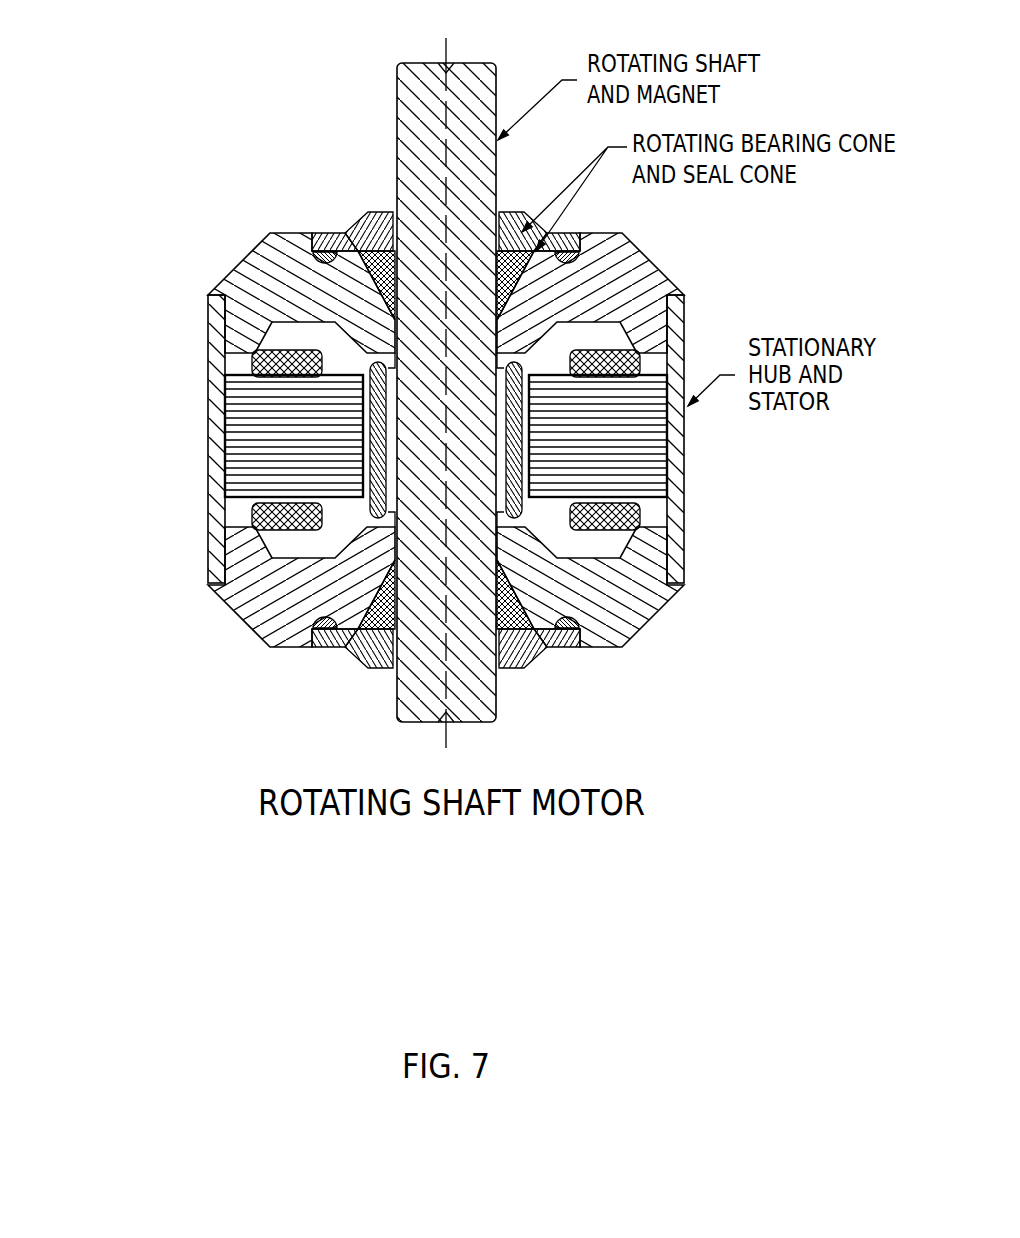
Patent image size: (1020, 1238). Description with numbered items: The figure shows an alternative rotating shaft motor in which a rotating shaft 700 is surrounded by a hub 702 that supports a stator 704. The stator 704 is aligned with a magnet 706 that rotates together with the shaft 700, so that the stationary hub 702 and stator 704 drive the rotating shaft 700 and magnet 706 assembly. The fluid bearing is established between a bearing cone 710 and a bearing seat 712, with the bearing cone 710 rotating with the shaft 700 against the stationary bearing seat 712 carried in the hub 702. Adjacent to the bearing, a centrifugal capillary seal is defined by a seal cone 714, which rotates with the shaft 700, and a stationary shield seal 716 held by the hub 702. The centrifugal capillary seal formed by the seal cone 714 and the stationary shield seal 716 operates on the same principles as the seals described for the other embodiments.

The rotating shaft 700 is at (494, 383).
The hub 702 is at (677, 458).
The stator 704 is at (642, 465).
The magnet 706 is at (523, 472).
The bearing cone 710 is at (498, 297).
The bearing seat 712 is at (632, 287).
The seal cone 714 is at (373, 237).
The stationary shield seal 716 is at (360, 213).